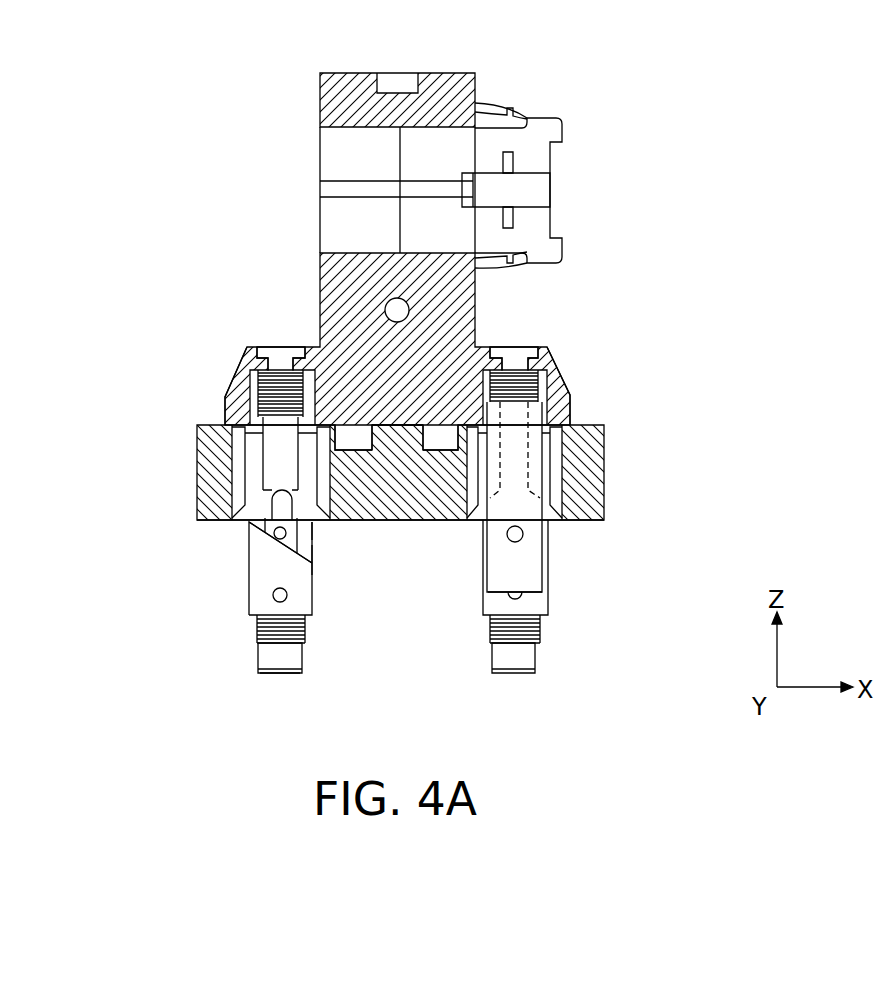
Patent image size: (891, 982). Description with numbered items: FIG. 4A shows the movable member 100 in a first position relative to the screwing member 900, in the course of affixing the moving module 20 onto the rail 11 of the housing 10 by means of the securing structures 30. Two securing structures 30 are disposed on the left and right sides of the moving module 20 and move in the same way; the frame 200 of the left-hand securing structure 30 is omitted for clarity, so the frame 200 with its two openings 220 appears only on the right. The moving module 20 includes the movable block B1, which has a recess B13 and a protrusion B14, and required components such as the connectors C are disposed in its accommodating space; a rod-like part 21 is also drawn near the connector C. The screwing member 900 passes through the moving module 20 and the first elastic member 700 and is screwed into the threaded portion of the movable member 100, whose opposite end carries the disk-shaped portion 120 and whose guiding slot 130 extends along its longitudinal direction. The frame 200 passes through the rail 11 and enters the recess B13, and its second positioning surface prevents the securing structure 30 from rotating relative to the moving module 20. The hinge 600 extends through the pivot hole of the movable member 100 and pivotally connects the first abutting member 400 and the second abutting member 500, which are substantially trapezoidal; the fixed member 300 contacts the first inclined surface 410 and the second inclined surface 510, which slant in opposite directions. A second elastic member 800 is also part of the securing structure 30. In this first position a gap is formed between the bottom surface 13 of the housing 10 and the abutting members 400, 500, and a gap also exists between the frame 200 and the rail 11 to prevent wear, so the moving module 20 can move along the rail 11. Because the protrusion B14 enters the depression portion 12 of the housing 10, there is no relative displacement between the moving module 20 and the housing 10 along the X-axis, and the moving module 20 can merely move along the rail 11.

The moving module 20 is at (322, 70).
The rod 21 is at (325, 213).
The connector C is at (547, 166).
The movable block B1 is at (332, 290).
The recess B13 is at (240, 405).
The protrusion B14 is at (440, 452).
The screwing member 900 is at (265, 350).
The first elastic member 700 is at (262, 375).
The housing 10 is at (604, 485).
The rail 11 is at (238, 441).
The depression portion 12 is at (352, 448).
The bottom surface 13 is at (590, 520).
The movable member 100 is at (270, 445).
The guiding slot 130 is at (283, 516).
The first abutting member 400 is at (255, 578).
The first inclined surface 410 is at (252, 524).
The second inclined surface 510 is at (315, 525).
The fixed member 300 is at (312, 557).
The second abutting member 500 is at (312, 568).
The hinge 600 is at (277, 597).
The second elastic member 800 is at (262, 643).
The securing structure 30 is at (270, 672).
The disk-shaped portion 120 is at (297, 676).
The frame 200 is at (512, 570).
The opening 220 is at (483, 530).